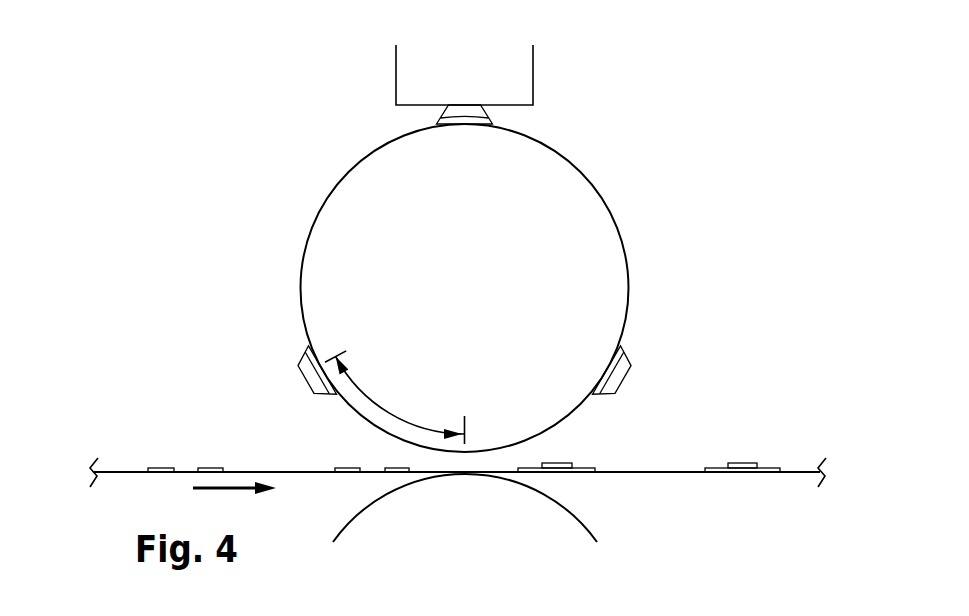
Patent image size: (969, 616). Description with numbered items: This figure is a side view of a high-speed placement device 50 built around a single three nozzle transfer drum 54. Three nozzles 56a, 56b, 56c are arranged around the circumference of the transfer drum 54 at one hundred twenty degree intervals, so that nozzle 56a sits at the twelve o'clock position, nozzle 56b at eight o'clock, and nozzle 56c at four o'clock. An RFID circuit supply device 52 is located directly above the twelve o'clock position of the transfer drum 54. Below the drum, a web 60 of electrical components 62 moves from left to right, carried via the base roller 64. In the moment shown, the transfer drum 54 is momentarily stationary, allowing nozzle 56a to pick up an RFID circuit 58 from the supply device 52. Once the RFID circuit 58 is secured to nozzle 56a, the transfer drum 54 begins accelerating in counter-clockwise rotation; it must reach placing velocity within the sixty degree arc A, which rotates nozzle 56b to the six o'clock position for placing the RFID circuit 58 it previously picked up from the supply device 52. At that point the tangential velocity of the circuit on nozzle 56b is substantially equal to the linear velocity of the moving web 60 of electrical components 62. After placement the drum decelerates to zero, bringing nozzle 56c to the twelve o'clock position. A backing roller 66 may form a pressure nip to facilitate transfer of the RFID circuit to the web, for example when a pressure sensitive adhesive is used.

The high-speed placement device 50 is at (210, 170).
The RFID circuit supply device 52 is at (476, 77).
The transfer drum 54 is at (478, 289).
The nozzle 56a is at (493, 110).
The nozzle 56b is at (310, 359).
The nozzle 56c is at (618, 366).
The RFID circuit 58 is at (437, 110).
The web 60 is at (180, 474).
The electrical components 62 is at (210, 468).
The base roller 64 is at (556, 519).
The backing roller 66 is at (733, 448).